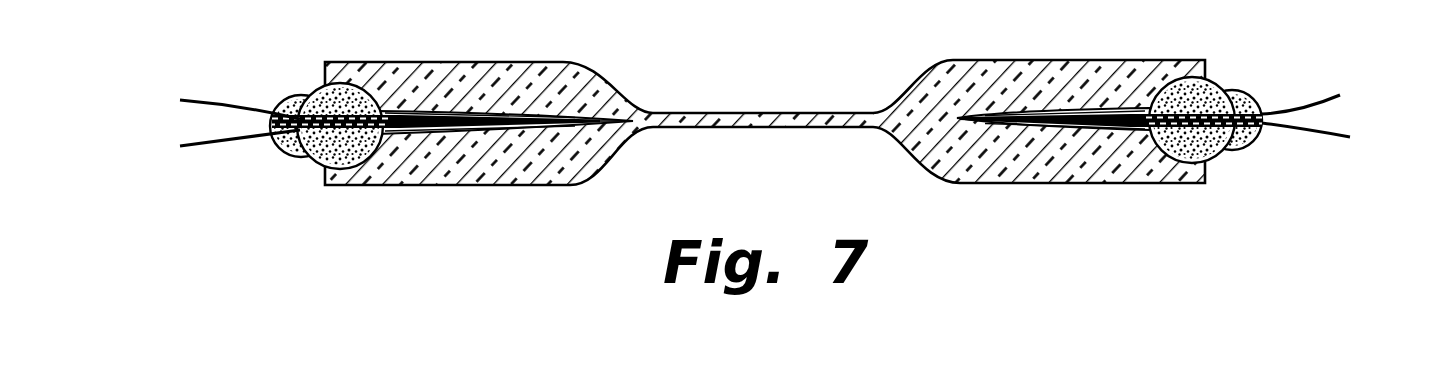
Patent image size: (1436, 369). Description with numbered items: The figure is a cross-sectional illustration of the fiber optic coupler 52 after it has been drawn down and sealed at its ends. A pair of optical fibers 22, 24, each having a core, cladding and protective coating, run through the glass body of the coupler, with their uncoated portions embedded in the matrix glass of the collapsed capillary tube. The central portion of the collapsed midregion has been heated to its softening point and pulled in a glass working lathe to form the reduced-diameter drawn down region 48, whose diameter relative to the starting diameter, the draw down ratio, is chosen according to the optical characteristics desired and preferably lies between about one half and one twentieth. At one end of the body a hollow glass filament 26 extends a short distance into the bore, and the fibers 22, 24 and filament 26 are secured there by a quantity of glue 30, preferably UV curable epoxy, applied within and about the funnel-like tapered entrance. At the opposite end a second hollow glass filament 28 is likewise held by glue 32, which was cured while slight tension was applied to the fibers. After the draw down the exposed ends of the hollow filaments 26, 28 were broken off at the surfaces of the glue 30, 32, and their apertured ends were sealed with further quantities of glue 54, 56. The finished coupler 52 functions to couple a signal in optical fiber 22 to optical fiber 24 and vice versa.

The optical fiber 22 is at (222, 110).
The optical fiber 24 is at (200, 140).
The hollow glass filament 26 is at (318, 137).
The second hollow glass filament 28 is at (1215, 150).
The glue 30 is at (313, 92).
The glue 32 is at (1213, 82).
The drawn down region 48 is at (765, 112).
The fiber optic coupler 52 is at (534, 186).
The quantity of glue 54 is at (280, 138).
The quantity of glue 56 is at (1263, 135).